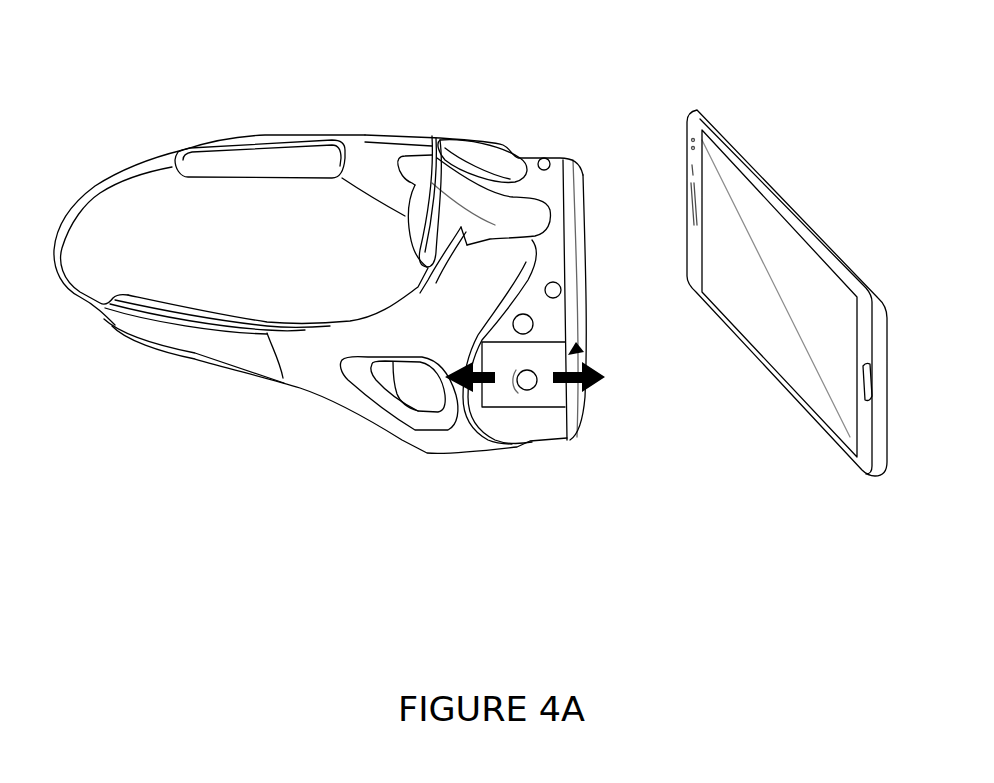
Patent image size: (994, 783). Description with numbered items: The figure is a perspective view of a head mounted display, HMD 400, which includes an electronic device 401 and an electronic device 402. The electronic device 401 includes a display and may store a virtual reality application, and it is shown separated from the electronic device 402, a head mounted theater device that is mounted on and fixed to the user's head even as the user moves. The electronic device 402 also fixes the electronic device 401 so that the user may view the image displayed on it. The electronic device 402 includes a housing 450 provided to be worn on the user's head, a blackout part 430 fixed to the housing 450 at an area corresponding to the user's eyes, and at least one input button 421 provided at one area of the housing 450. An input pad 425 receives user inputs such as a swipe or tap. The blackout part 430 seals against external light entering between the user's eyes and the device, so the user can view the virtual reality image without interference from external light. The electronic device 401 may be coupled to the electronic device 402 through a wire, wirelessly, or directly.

The head mounted display (HMD) 400 is at (603, 116).
The electronic device 401 is at (793, 203).
The electronic device 402 is at (387, 97).
The input button 421 is at (533, 322).
The input pad 425 is at (582, 349).
The blackout part 430 is at (405, 220).
The housing 450 is at (313, 368).